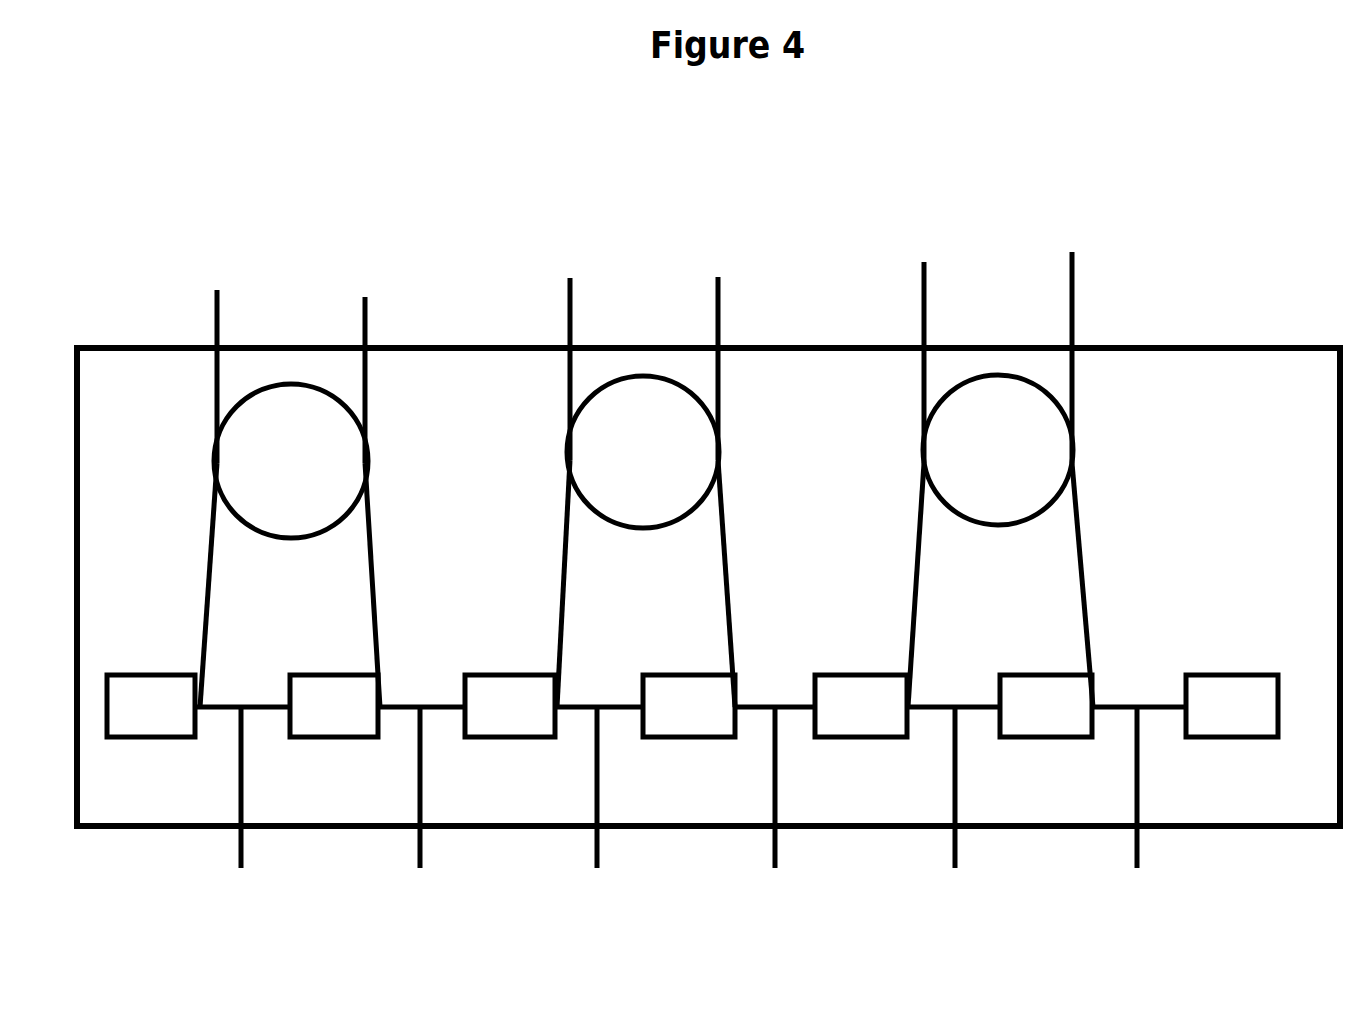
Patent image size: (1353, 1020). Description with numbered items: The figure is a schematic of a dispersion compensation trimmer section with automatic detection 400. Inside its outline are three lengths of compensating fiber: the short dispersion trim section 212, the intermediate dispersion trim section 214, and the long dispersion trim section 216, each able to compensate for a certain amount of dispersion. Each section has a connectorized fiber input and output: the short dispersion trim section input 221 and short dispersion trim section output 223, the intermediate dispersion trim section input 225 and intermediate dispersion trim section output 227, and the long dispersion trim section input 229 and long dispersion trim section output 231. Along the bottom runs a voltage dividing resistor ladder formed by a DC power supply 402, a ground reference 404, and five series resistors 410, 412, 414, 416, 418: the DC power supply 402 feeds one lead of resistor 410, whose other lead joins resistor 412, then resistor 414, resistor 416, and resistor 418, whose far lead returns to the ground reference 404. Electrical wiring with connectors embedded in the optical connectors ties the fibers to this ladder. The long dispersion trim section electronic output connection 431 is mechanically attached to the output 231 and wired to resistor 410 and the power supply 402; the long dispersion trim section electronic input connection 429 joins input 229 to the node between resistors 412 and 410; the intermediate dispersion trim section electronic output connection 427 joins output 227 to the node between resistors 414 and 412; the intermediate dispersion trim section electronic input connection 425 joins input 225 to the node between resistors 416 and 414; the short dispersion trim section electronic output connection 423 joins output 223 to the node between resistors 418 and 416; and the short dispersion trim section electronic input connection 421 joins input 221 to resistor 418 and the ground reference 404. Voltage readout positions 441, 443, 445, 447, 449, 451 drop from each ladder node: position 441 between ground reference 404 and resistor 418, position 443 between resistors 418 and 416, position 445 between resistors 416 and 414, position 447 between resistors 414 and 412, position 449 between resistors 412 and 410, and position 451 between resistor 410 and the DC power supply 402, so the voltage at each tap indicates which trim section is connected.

The dispersion compensation trimmer section with automatic detection 400 is at (708, 587).
The short dispersion trim section 212 is at (291, 461).
The intermediate dispersion trim section 214 is at (643, 452).
The long dispersion trim section 216 is at (998, 450).
The short dispersion trim section input 221 is at (244, 363).
The short dispersion trim section output 223 is at (343, 363).
The intermediate dispersion trim section input 225 is at (597, 355).
The intermediate dispersion trim section output 227 is at (700, 355).
The long dispersion trim section input 229 is at (950, 354).
The long dispersion trim section output 231 is at (1046, 354).
The short dispersion trim section electronic input connection 421 is at (234, 585).
The short dispersion trim section electronic output connection 423 is at (403, 585).
The intermediate dispersion trim section electronic input connection 425 is at (591, 583).
The intermediate dispersion trim section electronic output connection 427 is at (757, 583).
The long dispersion trim section electronic input connection 429 is at (945, 585).
The long dispersion trim section electronic output connection 431 is at (1112, 585).
The DC power supply 402 is at (1232, 706).
The ground reference 404 is at (151, 706).
The resistor 410 is at (1046, 706).
The resistor 412 is at (861, 706).
The resistor 414 is at (689, 706).
The resistor 416 is at (510, 706).
The resistor 418 is at (334, 706).
The voltage readout position 441 is at (251, 809).
The voltage readout position 443 is at (428, 809).
The voltage readout position 445 is at (610, 809).
The voltage readout position 447 is at (785, 809).
The voltage readout position 449 is at (963, 809).
The voltage readout position 451 is at (1138, 809).